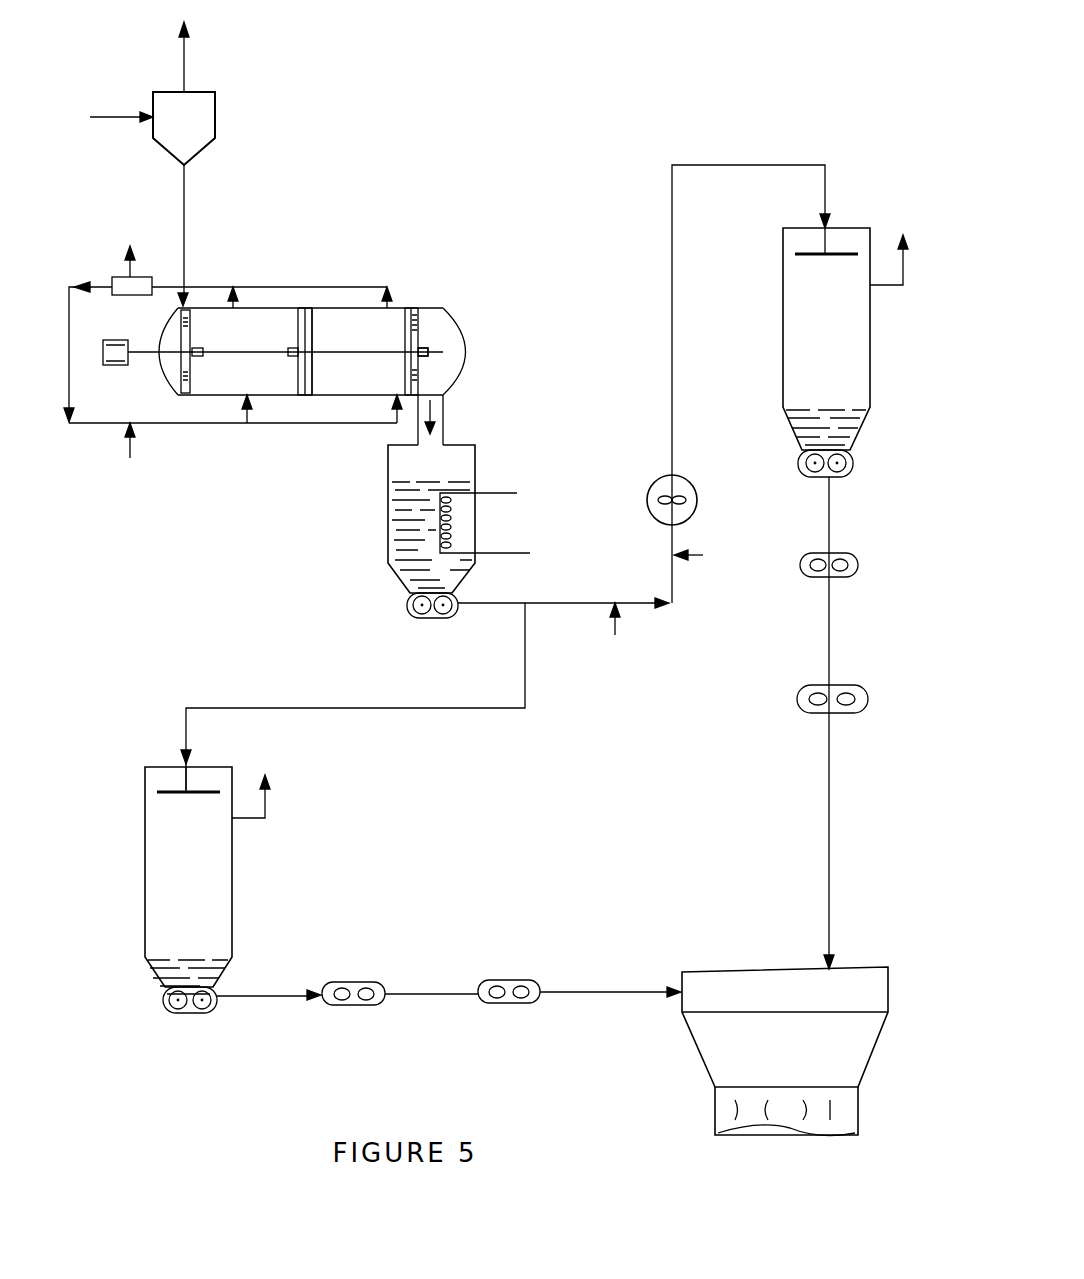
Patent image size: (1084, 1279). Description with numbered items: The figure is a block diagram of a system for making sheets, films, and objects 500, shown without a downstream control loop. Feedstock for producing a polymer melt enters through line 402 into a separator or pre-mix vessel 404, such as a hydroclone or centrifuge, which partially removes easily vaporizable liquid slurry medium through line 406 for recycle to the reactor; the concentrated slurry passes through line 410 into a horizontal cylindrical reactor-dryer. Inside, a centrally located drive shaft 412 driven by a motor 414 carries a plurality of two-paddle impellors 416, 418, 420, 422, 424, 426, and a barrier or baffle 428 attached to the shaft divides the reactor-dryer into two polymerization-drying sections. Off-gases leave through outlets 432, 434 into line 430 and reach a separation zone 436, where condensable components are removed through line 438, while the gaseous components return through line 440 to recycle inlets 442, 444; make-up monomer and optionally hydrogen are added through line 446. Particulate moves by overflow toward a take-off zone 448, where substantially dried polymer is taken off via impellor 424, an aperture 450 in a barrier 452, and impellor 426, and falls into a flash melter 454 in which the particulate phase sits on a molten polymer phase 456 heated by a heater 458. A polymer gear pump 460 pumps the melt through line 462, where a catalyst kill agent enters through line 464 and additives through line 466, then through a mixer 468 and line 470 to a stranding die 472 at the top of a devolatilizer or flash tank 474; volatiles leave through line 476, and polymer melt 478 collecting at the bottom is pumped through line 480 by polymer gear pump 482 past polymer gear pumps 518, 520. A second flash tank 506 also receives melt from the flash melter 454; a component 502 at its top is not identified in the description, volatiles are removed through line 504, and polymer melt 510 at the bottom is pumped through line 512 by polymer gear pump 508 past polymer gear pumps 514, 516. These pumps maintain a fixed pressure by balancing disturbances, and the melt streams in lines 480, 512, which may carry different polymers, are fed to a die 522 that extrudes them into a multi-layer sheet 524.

The line 402 is at (108, 114).
The pre-mix vessel 404 is at (170, 129).
The line 406 is at (190, 70).
The line 410 is at (186, 214).
The drive shaft 412 is at (145, 350).
The motor 414 is at (120, 368).
The paddle impellor 416 is at (185, 396).
The paddle impellor 418 is at (198, 358).
The paddle impellor 420 is at (300, 318).
The paddle impellor 422 is at (316, 397).
The paddle impellor 424 is at (408, 310).
The paddle impellor 426 is at (430, 352).
The barrier (baffle) 428 is at (292, 397).
The line 430 is at (214, 286).
The outlet 432 is at (240, 300).
The outlet 434 is at (390, 290).
The separation zone 436 is at (128, 297).
The line 438 is at (134, 270).
The line 440 is at (96, 283).
The recycle inlet 442 is at (242, 428).
The recycle inlet 444 is at (394, 408).
The line 446 is at (126, 452).
The take-off zone 448 is at (440, 372).
The aperture 450 is at (418, 330).
The barrier (baffle) 452 is at (425, 345).
The flash melter 454 is at (438, 473).
The molten polymer phase 456 is at (395, 522).
The heater 458 is at (512, 552).
The polymer gear pump 460 is at (405, 608).
The line 462 is at (570, 600).
The line 464 is at (628, 622).
The line 466 is at (690, 560).
The mixer 468 is at (697, 510).
The line 470 is at (670, 326).
The stranding die 472 is at (850, 252).
The flash tank 474 is at (845, 333).
The line 476 is at (910, 272).
The polymer melt 478 is at (862, 440).
The line 480 is at (832, 514).
The polymer gear pump 482 is at (797, 465).
The system for making sheets, films, and objects 500 is at (542, 1070).
The baffle plate 502 is at (210, 790).
The line 504 is at (272, 806).
The second flash tank 506 is at (210, 863).
The polymer gear pump 508 is at (160, 1003).
The polymer melt 510 is at (235, 975).
The line 512 is at (282, 1000).
The polymer gear pump 514 is at (376, 982).
The polymer gear pump 516 is at (520, 980).
The polymer gear pump 518 is at (860, 575).
The polymer gear pump 520 is at (806, 715).
The die 522 is at (890, 988).
The multi-layer sheet 524 is at (714, 1116).